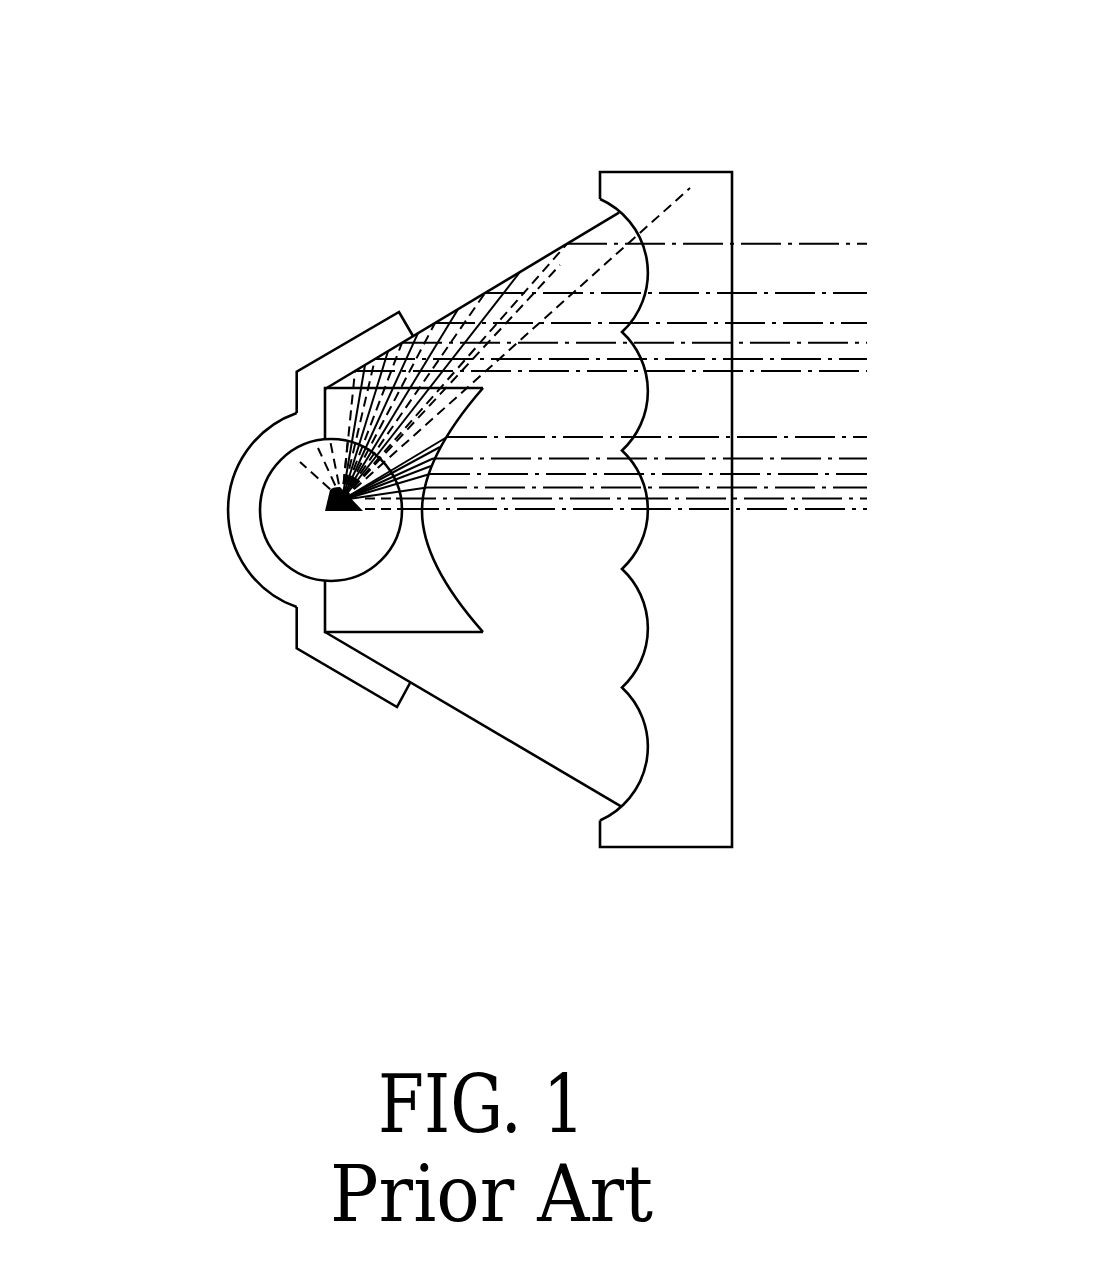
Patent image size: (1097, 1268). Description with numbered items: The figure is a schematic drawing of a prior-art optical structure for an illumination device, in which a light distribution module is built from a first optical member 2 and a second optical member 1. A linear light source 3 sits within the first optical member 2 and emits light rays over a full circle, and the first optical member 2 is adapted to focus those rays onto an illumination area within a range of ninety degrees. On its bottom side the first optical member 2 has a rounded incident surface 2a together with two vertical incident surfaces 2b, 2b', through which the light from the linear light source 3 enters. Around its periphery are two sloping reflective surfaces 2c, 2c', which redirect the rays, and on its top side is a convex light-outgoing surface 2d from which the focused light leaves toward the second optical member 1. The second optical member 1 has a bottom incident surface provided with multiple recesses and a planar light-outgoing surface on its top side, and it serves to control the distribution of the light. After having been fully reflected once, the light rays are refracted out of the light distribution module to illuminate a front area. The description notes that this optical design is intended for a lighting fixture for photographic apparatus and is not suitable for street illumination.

The second optical member 1 is at (652, 193).
The first optical member 2 is at (517, 283).
The rounded incident surface 2a is at (422, 513).
The vertical incident surface 2b is at (318, 295).
The vertical incident surface 2b' is at (291, 696).
The sloping reflective surface 2c is at (472, 252).
The sloping reflective surface 2c' is at (473, 783).
The convex light-outgoing surface 2d is at (648, 278).
The linear light source 3 is at (256, 512).